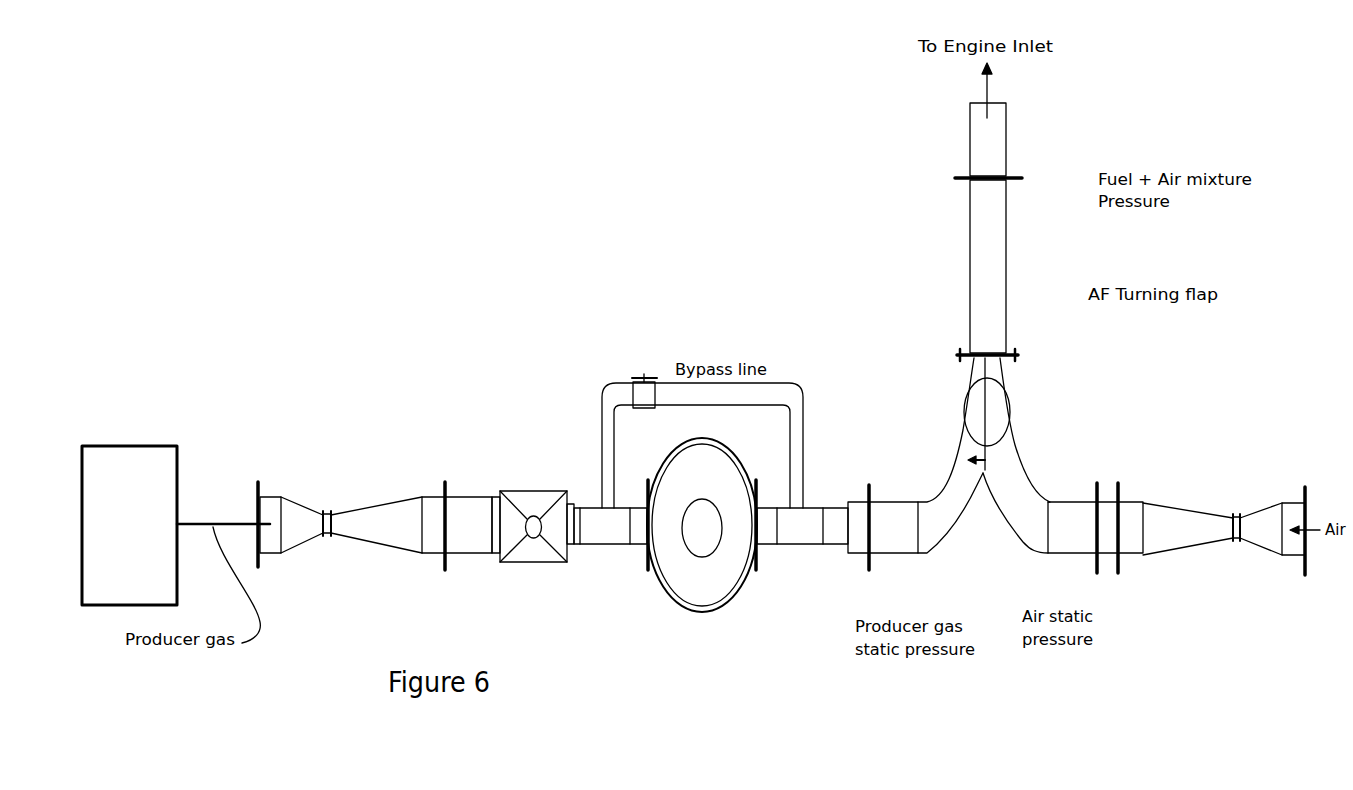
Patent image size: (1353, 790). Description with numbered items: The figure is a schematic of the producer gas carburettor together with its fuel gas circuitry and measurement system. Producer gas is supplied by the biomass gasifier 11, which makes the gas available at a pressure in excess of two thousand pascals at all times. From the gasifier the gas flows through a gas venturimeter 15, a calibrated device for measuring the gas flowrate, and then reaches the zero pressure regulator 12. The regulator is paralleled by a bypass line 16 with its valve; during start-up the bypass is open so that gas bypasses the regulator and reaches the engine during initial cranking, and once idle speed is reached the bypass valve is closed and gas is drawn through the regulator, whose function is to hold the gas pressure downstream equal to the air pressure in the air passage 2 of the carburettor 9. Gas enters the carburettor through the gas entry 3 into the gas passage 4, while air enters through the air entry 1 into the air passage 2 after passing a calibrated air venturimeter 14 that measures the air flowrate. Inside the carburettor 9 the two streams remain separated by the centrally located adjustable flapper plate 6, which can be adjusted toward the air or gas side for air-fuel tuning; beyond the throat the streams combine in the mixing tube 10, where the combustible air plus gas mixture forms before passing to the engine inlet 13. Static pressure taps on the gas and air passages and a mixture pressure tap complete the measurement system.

The air entry 1 is at (1306, 512).
The air passage 2 is at (1078, 522).
The gas entry 3 is at (256, 520).
The gas passage 4 is at (884, 530).
The flapper plate 6 is at (986, 355).
The carburettor 9 is at (1010, 408).
The mixing tube 10 is at (985, 205).
The biomass gasifier 11 is at (160, 446).
The zero pressure regulator 12 is at (704, 612).
The engine inlet outlet 13 is at (1025, 106).
The air venturimeter 14 is at (1236, 539).
The gas venturimeter 15 is at (328, 536).
The bypass line 16 is at (644, 374).